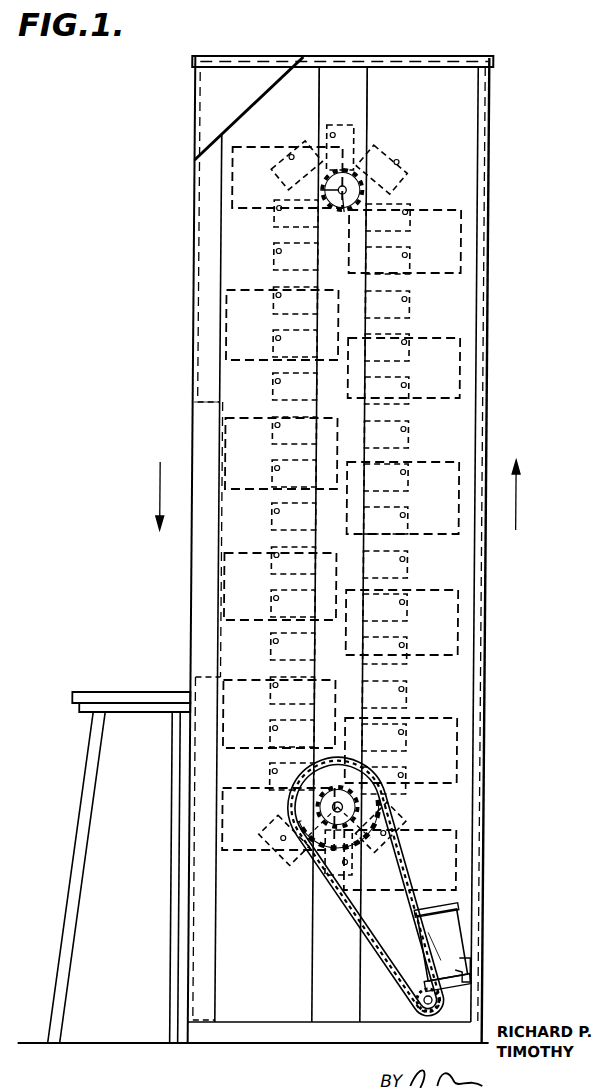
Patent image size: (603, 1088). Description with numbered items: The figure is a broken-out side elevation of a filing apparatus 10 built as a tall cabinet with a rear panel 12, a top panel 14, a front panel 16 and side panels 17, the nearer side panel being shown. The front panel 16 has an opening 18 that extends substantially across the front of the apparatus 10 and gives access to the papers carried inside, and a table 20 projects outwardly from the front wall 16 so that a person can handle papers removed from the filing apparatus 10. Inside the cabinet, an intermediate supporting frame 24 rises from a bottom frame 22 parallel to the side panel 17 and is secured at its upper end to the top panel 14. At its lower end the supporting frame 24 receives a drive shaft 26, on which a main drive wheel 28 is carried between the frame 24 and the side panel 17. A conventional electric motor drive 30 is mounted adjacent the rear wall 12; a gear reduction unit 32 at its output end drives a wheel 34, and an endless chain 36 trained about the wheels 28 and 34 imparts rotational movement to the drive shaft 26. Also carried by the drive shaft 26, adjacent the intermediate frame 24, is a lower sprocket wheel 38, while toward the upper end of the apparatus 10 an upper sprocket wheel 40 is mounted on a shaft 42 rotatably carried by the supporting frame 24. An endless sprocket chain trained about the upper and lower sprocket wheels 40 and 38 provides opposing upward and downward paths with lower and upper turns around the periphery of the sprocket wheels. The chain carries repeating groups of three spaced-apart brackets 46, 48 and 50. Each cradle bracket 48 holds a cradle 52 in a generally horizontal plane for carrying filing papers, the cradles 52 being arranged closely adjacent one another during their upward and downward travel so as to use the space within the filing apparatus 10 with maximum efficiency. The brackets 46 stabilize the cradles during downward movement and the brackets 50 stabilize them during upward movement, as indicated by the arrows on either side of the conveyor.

The filing apparatus 10 is at (553, 120).
The rear panel 12 is at (491, 246).
The top panel 14 is at (377, 60).
The front panel 16 is at (195, 137).
The side panel 17 is at (236, 80).
The opening 18 is at (201, 400).
The table 20 is at (90, 684).
The bottom frame 22 is at (297, 1030).
The intermediate supporting frame 24 is at (344, 95).
The drive shaft 26 is at (340, 814).
The main drive wheel 28 is at (302, 778).
The electric motor drive 30 is at (454, 930).
The gear reduction unit 32 is at (462, 1000).
The wheel 34 is at (431, 1008).
The endless chain 36 is at (358, 896).
The lower sprocket wheel 38 is at (382, 806).
The upper sprocket wheel 40 is at (357, 177).
The shaft 42 is at (321, 191).
The bracket 46 is at (407, 307).
The cradle bracket 48 is at (389, 211).
The bracket 50 is at (406, 261).
The cradle 52 is at (252, 186).